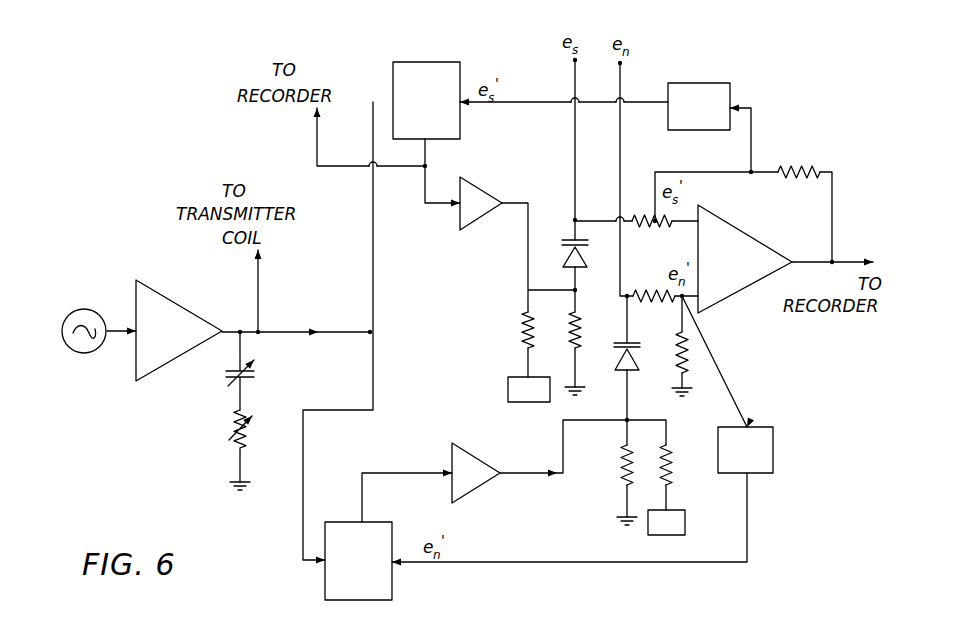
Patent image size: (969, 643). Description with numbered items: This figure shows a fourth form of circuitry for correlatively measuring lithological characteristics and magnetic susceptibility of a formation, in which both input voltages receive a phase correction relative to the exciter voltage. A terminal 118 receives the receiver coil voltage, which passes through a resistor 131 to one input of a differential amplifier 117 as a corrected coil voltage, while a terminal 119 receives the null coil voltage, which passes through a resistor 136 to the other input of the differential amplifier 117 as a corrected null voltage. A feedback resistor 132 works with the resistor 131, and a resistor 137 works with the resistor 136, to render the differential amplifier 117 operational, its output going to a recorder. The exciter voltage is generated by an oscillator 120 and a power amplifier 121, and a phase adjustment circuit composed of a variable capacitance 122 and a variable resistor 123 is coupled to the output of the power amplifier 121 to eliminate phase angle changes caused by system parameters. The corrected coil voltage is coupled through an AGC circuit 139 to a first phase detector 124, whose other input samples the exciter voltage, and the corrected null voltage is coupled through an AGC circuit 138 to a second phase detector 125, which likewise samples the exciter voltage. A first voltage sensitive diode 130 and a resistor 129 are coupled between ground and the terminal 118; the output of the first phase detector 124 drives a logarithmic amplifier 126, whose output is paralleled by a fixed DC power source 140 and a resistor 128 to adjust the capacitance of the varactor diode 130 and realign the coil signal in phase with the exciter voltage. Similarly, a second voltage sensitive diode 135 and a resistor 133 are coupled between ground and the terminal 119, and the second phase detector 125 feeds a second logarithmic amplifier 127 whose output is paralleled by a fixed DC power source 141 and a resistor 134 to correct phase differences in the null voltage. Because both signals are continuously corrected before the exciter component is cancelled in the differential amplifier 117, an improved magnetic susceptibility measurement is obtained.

The differential amplifier 117 is at (746, 235).
The terminal 118 is at (573, 61).
The terminal 119 is at (622, 63).
The oscillator 120 is at (64, 317).
The power amplifier 121 is at (177, 360).
The variable capacitance 122 is at (266, 377).
The variable resistor 123 is at (245, 446).
The first phase detector 124 is at (425, 62).
The second phase detector 125 is at (392, 590).
The logarithmic amplifier 126 is at (470, 228).
The second logarithmic amplifier 127 is at (473, 455).
The resistor 128 is at (521, 321).
The resistor 129 is at (579, 328).
The first voltage sensitive diode 130 is at (562, 240).
The resistor 131 is at (633, 215).
The resistor 132 is at (800, 165).
The resistor 133 is at (622, 478).
The resistor 134 is at (672, 478).
The second voltage sensitive diode 135 is at (624, 364).
The resistor 136 is at (643, 290).
The resistor 137 is at (689, 356).
The AGC circuit 138 is at (773, 455).
The AGC circuit 139 is at (730, 92).
The fixed DC power source 140 is at (508, 388).
The fixed DC power source 141 is at (685, 527).